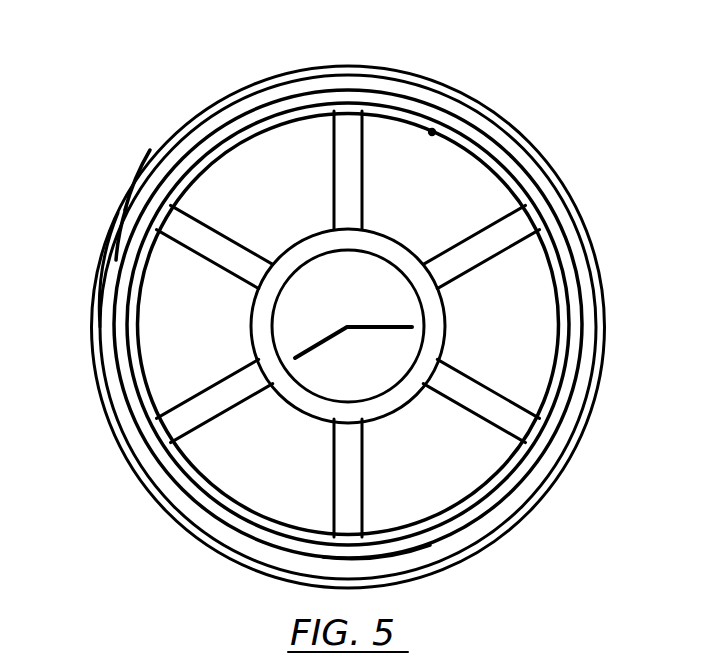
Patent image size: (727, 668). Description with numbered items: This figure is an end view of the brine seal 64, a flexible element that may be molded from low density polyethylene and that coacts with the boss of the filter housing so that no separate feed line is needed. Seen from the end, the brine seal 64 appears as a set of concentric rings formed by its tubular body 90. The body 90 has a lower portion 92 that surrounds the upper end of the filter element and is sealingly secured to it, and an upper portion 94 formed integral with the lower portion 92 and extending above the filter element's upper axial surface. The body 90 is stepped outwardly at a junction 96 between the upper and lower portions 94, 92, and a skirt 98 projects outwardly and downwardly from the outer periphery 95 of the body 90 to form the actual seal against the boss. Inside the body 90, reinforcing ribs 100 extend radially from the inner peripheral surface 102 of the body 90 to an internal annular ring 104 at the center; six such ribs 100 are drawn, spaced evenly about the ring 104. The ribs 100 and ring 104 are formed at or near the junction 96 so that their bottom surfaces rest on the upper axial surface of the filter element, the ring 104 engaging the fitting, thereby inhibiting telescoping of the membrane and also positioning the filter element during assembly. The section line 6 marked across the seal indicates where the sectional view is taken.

The brine seal 64 is at (565, 175).
The tubular body 90 is at (135, 215).
The lower portion 92 is at (130, 277).
The upper portion 94 is at (172, 185).
The outer periphery 95 is at (130, 337).
The junction 96 is at (220, 132).
The skirt 98 is at (294, 70).
The ribs 100 is at (366, 186).
The inner peripheral surface 102 is at (434, 130).
The internal annular ring 104 is at (447, 320).
The section line 6- 6 is at (555, 325).